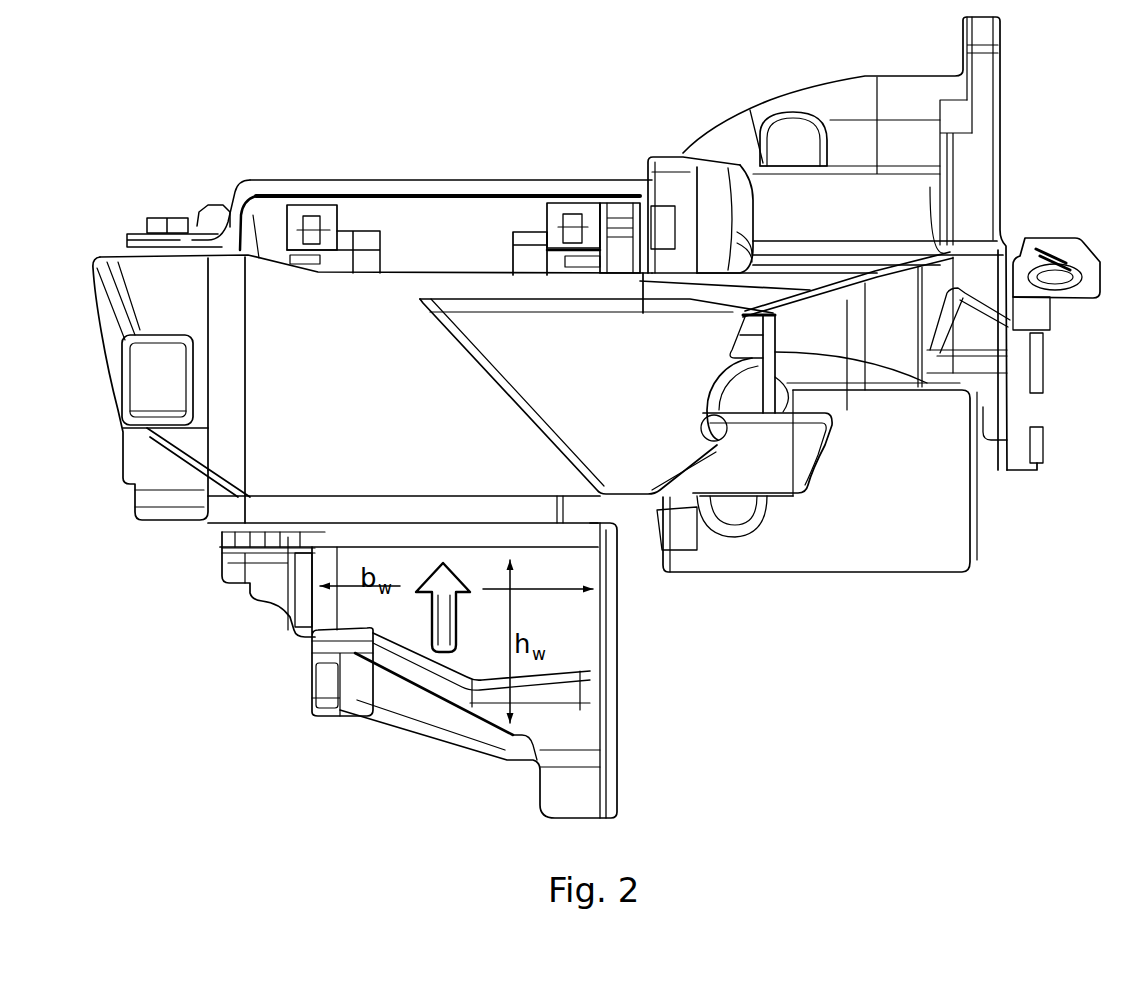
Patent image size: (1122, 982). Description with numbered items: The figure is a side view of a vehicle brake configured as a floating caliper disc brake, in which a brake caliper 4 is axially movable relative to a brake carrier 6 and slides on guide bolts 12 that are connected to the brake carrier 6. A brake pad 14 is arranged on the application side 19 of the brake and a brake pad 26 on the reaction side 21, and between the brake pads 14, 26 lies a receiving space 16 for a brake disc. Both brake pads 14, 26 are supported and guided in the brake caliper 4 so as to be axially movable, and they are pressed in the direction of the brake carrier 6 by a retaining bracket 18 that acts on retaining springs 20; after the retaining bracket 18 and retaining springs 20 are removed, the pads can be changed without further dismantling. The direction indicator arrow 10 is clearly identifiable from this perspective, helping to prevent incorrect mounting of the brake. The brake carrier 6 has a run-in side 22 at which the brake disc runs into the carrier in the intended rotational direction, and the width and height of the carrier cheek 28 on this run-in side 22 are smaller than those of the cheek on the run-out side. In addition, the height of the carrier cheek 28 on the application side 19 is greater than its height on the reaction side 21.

The brake caliper 4 is at (306, 428).
The brake carrier 6 is at (553, 620).
The direction indicator arrow 10 is at (444, 590).
The guide bolts 12 is at (896, 520).
The brake pad 14 is at (530, 267).
The receiving space 16 is at (415, 247).
The retaining bracket 18 is at (450, 183).
The application side 19 is at (623, 618).
The retaining springs 20 is at (297, 220).
The reaction side 21 is at (268, 616).
The run-in side 22 is at (332, 738).
The brake pad 26 is at (358, 260).
The carrier cheek 28 is at (323, 627).